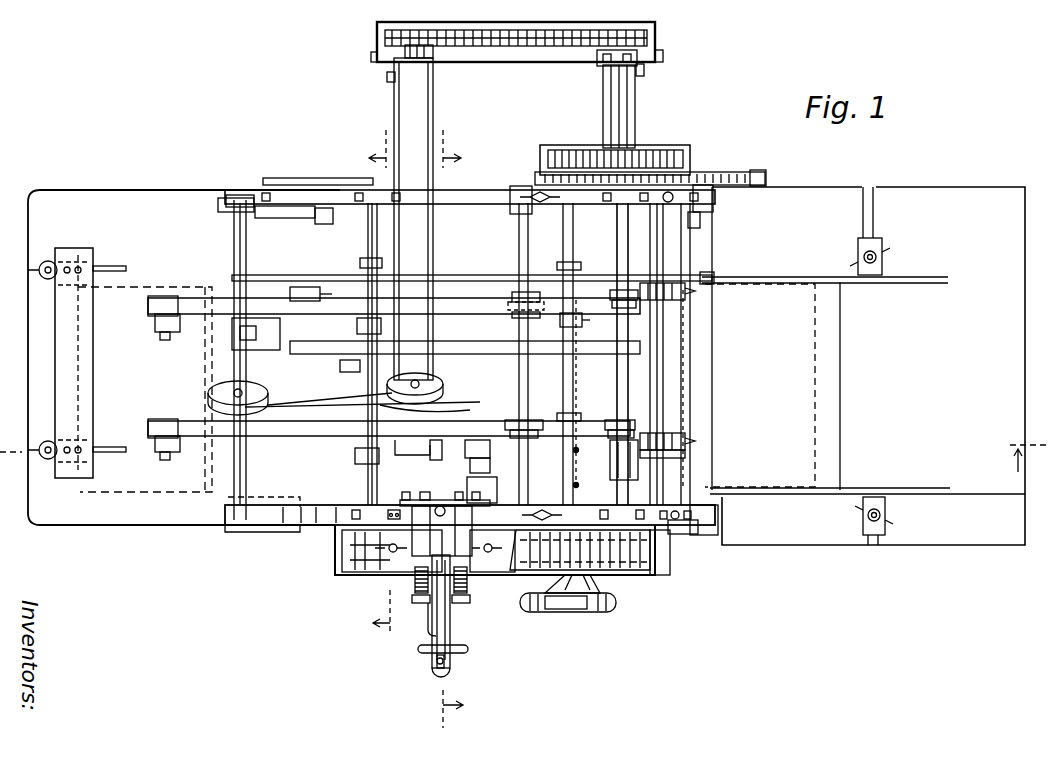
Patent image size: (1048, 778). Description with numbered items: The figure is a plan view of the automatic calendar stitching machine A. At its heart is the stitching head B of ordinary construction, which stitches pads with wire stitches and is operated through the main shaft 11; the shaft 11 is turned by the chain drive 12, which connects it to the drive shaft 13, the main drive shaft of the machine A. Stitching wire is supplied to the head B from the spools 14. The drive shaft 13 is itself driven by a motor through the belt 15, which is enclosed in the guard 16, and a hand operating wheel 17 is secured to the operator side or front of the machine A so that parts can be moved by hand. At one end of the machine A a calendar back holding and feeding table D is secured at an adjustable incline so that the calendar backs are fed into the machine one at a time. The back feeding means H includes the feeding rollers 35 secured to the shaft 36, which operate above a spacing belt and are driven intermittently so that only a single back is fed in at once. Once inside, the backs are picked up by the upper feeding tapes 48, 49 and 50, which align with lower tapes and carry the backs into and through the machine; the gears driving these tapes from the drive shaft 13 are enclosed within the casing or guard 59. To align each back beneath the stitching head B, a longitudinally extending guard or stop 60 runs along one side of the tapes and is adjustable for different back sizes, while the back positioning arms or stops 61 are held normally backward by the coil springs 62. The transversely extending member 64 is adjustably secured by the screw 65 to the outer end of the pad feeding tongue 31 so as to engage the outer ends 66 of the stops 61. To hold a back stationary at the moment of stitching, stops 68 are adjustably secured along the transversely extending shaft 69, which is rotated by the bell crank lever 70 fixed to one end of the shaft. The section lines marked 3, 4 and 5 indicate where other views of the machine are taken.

The main shaft 11 is at (378, 49).
The chain drive 12 is at (512, 46).
The drive shaft 13 is at (623, 101).
The spools 14 is at (208, 393).
The belt 15 is at (655, 560).
The guard 16 is at (630, 574).
The hand operating wheel 17 is at (554, 611).
The pad feeding tongue 31 is at (450, 633).
The feeding rollers 35 is at (688, 432).
The shaft 36 is at (690, 478).
The feeding tape 48 is at (283, 437).
The feeding tape 49 is at (273, 349).
The feeding tape 50 is at (270, 309).
The casing or guard 59 is at (688, 160).
The longitudinally extending guard or stop 60 is at (465, 280).
The back positioning arms or stops 61 is at (418, 588).
The coil springs 62 is at (476, 602).
The transversally extending member 64 is at (462, 656).
The screw 65 is at (437, 665).
The outer ends 66 is at (437, 620).
The stops 68 is at (381, 326).
The transversely extending shaft 69 is at (370, 250).
The bell crank lever 70 is at (373, 182).
The section line 3- 3 is at (524, 463).
The section line 4- 4 is at (450, 429).
The section line 5- 5 is at (380, 387).
The automatic stitching machine A is at (371, 417).
The stitching head B is at (440, 442).
The calendar back holding and feeding table D is at (832, 485).
The back feeding means H is at (696, 446).